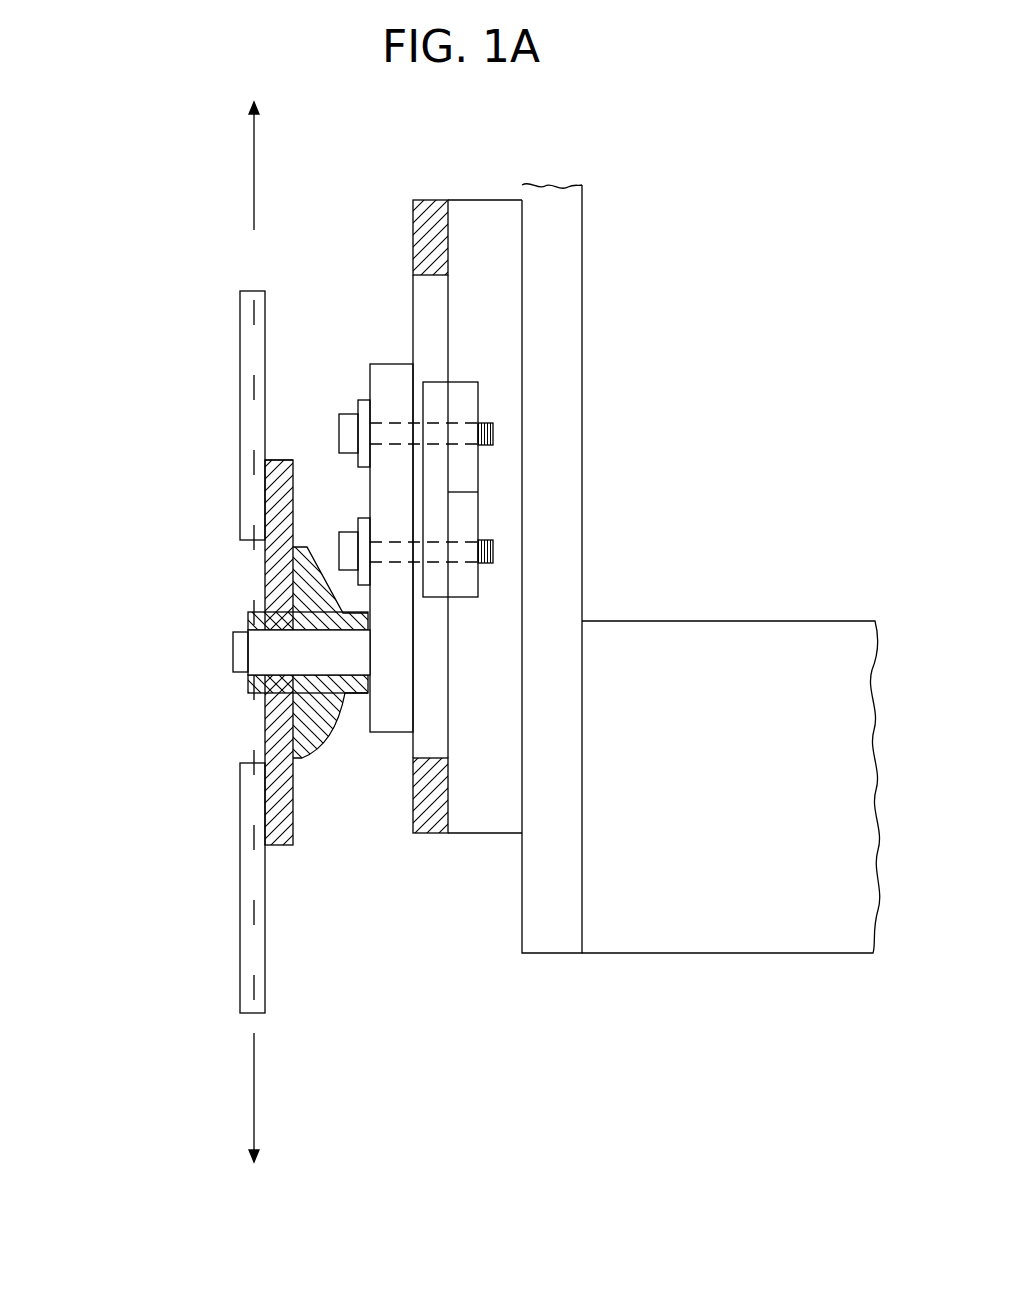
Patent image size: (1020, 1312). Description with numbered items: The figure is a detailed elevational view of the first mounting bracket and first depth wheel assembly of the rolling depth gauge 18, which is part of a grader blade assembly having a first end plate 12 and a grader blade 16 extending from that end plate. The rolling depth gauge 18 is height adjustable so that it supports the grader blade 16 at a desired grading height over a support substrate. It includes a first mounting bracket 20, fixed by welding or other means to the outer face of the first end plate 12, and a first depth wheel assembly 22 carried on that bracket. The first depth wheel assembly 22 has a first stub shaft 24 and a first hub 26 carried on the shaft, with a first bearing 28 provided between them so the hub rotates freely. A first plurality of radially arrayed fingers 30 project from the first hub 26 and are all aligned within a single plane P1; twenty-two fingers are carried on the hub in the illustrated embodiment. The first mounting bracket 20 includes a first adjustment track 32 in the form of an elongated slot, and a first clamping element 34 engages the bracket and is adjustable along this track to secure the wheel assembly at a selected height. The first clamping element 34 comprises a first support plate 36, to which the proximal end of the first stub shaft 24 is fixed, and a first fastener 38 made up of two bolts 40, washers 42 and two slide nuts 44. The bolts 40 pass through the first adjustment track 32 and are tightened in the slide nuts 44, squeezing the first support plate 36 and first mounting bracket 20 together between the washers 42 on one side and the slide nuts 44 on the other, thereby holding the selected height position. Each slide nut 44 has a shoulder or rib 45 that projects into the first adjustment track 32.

The first end plate 12 is at (582, 335).
The grader blade 16 is at (765, 640).
The rolling depth gauge 18 is at (216, 612).
The first mounting bracket 20 is at (481, 514).
The first depth wheel assembly 22 is at (164, 888).
The first stub shaft 24 is at (255, 653).
The first hub 26 is at (245, 683).
The first bearing 28 is at (265, 620).
The first plurality of radially arrayed fingers 30 is at (245, 389).
The first adjustment track 32 is at (434, 648).
The first clamping element 34 is at (420, 558).
The first support plate 36 is at (389, 700).
The first fastener 38 is at (292, 452).
The bolts 40 is at (350, 530).
The washers 42 is at (334, 433).
The slide nuts 44 is at (544, 489).
The shoulder or rib 45 is at (434, 579).
The single plane P1 is at (252, 147).